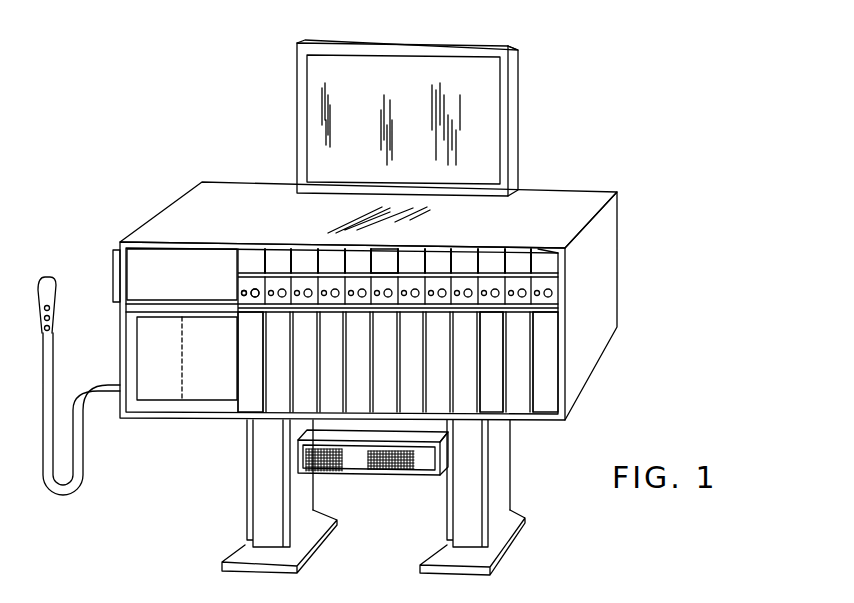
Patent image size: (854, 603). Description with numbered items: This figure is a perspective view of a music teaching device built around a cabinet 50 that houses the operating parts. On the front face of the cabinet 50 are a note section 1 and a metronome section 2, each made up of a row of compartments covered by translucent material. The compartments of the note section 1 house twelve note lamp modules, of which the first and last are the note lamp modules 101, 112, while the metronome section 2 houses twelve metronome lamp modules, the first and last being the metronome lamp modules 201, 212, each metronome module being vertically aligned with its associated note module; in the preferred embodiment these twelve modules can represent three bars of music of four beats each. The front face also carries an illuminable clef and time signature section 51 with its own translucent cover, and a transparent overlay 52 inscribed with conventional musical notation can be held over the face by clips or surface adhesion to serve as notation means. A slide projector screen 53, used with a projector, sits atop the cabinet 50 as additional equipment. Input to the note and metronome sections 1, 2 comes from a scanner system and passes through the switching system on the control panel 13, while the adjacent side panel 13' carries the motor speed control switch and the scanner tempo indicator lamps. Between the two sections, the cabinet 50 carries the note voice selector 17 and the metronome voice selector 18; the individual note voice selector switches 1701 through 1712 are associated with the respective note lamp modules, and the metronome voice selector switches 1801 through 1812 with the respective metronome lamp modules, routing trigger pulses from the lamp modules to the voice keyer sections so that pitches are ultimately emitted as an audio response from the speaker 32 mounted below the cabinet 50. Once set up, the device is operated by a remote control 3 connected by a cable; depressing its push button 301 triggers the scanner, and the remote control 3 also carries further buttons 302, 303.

The note section 1 is at (389, 364).
The metronome section 2 is at (391, 273).
The remote control 3 is at (40, 280).
The control panel 13 is at (182, 274).
The side panel 13' is at (97, 258).
The note voice selector 17 is at (574, 290).
The metronome voice selector 18 is at (426, 284).
The speaker 32 is at (372, 477).
The cabinet 50 is at (230, 174).
The clef and time signature section 51 is at (168, 367).
The transparent overlay 52 is at (487, 392).
The slide projector screen 53 is at (503, 45).
The note lamp module 101 is at (248, 390).
The note lamp module 112 is at (543, 390).
The metronome lamp module 201 is at (250, 262).
The metronome lamp module 212 is at (548, 238).
The push button 301 is at (50, 306).
The second button 302 is at (50, 317).
The third button 303 is at (50, 330).
The note voice selector switch 1701 is at (242, 296).
The note voice selector switch 1712 is at (552, 297).
The metronome voice selector switch 1801 is at (256, 298).
The metronome voice selector switch 1812 is at (540, 298).